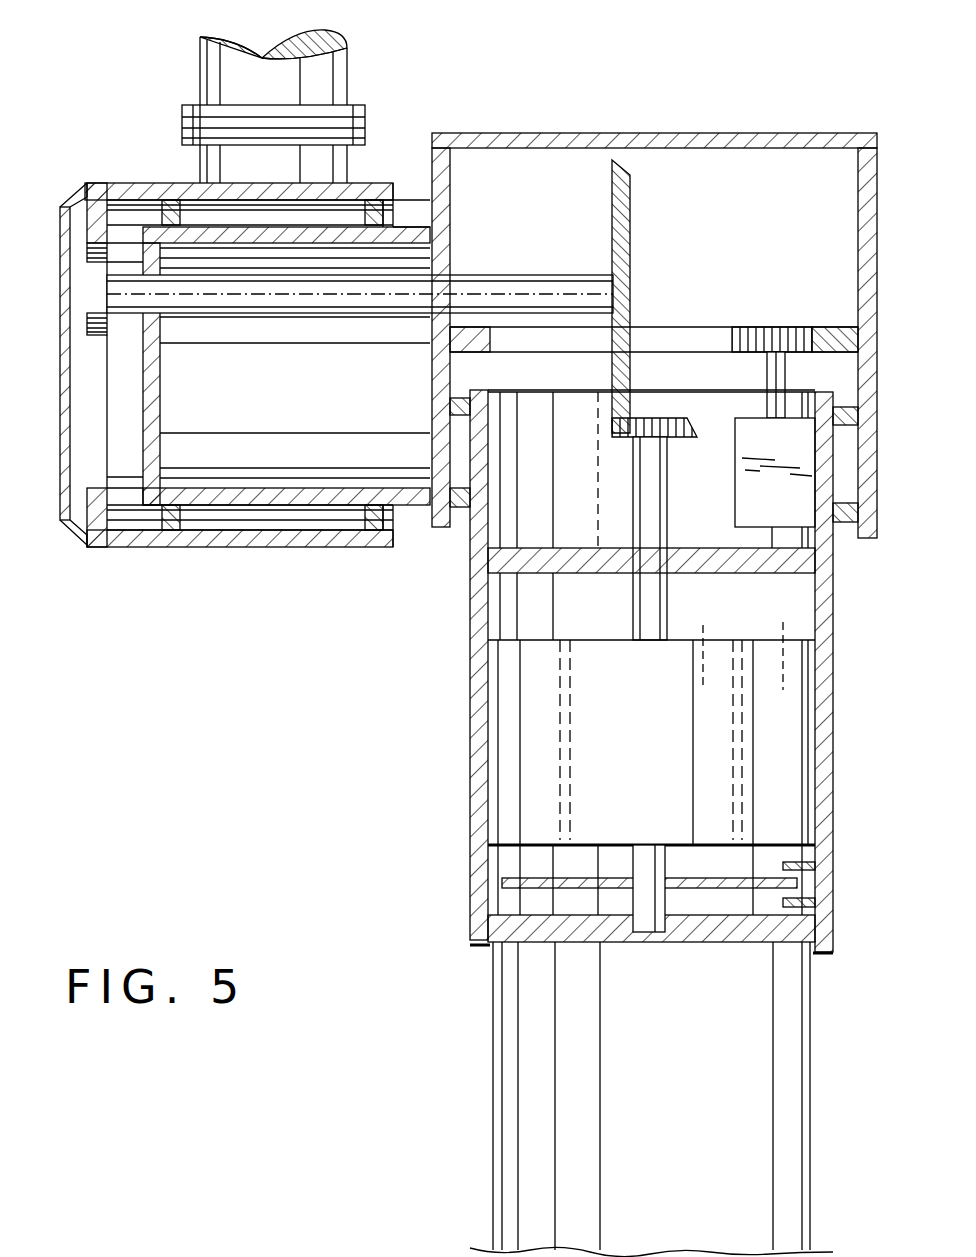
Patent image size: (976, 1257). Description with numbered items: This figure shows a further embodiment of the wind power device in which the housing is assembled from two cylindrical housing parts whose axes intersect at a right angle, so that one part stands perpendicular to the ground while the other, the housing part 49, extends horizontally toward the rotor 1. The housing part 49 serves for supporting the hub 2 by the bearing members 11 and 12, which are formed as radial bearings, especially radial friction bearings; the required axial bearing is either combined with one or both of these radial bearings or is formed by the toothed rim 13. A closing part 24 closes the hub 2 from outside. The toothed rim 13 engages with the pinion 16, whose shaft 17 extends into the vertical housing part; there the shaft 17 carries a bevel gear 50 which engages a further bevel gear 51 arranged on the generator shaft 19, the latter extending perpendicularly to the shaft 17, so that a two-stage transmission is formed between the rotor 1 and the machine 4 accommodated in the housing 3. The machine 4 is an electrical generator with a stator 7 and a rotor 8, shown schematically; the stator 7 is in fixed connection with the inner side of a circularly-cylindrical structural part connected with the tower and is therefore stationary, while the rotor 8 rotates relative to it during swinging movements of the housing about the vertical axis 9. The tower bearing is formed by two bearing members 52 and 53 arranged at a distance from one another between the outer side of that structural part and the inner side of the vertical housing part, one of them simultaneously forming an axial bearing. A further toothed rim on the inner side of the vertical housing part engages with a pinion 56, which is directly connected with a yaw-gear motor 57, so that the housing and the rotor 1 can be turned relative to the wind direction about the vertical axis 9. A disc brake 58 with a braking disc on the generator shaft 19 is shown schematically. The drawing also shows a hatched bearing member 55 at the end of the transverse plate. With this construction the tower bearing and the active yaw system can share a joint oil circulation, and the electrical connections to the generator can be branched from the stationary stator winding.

The rotor 1 is at (335, 75).
The hub 2 is at (143, 183).
The housing 3 is at (432, 225).
The machine 4 is at (560, 850).
The stator 7 is at (783, 625).
The rotor 8 is at (703, 644).
The vertical axis 9 is at (510, 998).
The bearing member 11 is at (173, 548).
The bearing member 12 is at (372, 548).
The toothed rim 13 is at (93, 215).
The pinion 16 is at (93, 268).
The shaft 17 is at (123, 292).
The generator shaft 19 is at (655, 855).
The closing part 24 is at (65, 380).
The housing part 49 is at (408, 225).
The bevel gear 50 is at (630, 437).
The bevel gear 51 is at (612, 403).
The bearing member 52 is at (855, 510).
The bearing member 53 is at (853, 413).
The bearing 55 is at (840, 340).
The pinion 56 is at (782, 335).
The yaw-gear motor 57 is at (813, 468).
The disc brake 58 is at (797, 883).